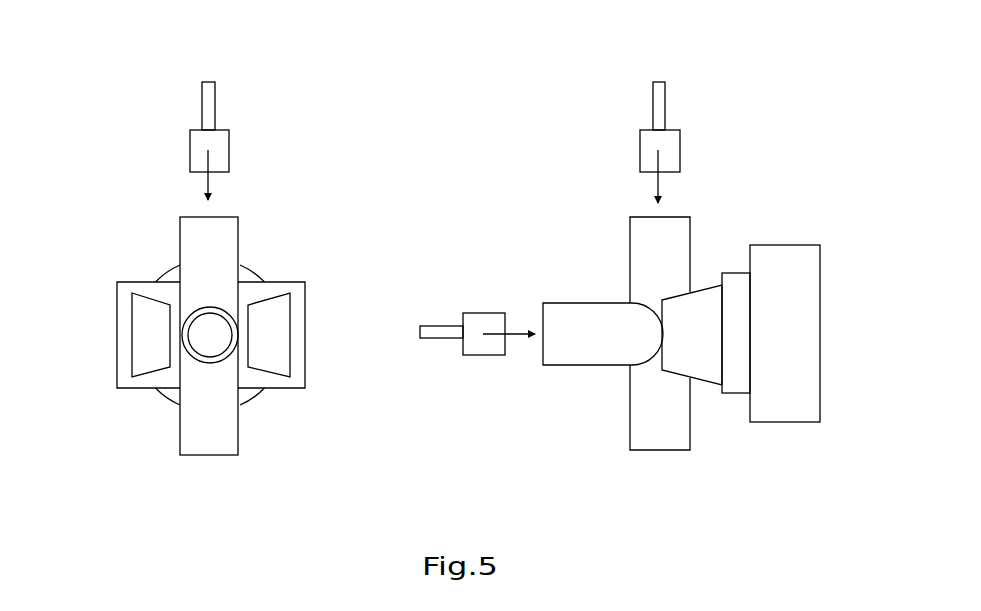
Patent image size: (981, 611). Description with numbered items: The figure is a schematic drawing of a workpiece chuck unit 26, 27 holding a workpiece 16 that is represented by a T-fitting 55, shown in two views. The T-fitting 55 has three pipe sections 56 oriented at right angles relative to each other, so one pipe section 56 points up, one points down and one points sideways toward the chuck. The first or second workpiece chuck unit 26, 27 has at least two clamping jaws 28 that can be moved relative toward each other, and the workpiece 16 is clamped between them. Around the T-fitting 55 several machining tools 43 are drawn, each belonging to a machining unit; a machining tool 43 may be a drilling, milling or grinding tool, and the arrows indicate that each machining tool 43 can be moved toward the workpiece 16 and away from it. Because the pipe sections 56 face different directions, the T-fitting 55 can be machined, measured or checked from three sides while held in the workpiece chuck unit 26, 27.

The machining tool 43 is at (222, 140).
The workpiece 16 is at (435, 323).
The T-fitting 55 is at (225, 248).
The pipe section 56 is at (178, 235).
The clamping jaw 28 is at (140, 300).
The first workpiece chuck unit 26 is at (515, 317).
The second workpiece chuck unit 27 is at (255, 402).